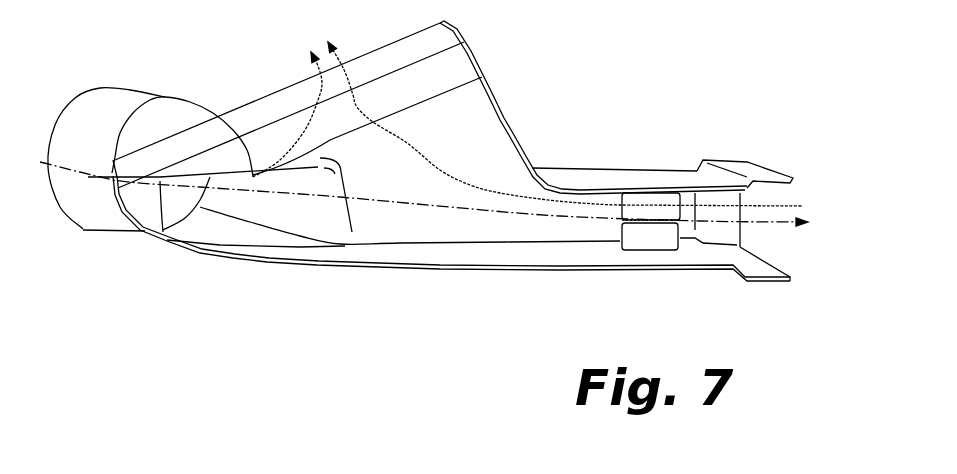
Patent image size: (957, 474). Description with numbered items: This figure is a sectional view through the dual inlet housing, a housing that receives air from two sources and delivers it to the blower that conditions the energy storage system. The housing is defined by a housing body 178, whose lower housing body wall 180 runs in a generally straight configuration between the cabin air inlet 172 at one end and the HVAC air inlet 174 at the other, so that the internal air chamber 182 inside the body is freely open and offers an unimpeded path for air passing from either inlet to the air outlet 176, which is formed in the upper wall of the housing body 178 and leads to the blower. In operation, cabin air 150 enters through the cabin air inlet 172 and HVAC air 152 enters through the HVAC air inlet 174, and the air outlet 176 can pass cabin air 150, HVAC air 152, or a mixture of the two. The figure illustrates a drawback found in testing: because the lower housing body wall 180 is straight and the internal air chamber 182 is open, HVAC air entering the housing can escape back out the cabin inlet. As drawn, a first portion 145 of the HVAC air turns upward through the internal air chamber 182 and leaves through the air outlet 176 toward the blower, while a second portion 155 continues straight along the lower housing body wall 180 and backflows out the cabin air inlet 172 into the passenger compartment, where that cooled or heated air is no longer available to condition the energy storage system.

The first portion 145 is at (228, 125).
The cabin air 150 is at (482, 185).
The HVAC air 152 is at (88, 177).
The second portion 155 is at (389, 203).
The cabin air inlet 172 is at (792, 176).
The HVAC air inlet 174 is at (73, 100).
The air outlet 176 is at (357, 60).
The housing body 178 is at (519, 109).
The lower housing body wall 180 is at (445, 270).
The internal air chamber 182 is at (389, 175).